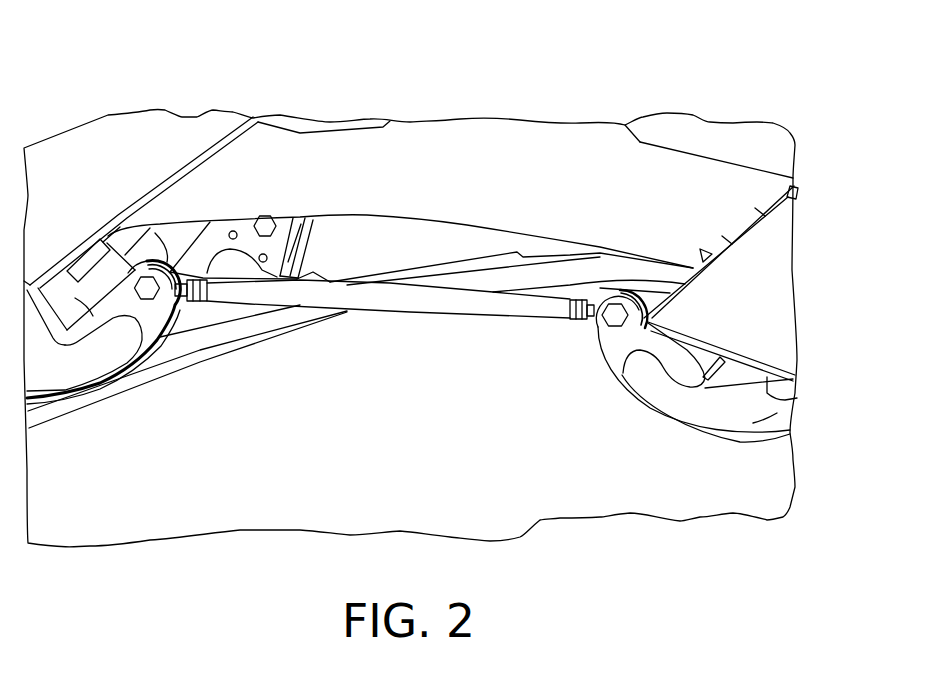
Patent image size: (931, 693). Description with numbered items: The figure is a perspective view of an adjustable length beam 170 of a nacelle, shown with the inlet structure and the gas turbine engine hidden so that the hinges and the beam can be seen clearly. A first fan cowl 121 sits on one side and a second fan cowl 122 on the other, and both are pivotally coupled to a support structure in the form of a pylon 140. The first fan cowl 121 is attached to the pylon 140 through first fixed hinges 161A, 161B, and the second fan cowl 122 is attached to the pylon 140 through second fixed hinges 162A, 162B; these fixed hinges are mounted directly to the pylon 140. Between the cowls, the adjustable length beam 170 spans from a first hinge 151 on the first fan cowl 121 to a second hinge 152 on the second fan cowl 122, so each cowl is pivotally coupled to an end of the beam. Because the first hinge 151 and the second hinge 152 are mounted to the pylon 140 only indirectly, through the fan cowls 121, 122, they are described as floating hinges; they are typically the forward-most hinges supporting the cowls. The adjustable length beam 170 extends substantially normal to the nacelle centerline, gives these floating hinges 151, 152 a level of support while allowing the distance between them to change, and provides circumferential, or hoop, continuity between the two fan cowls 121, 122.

The pylon 140 is at (482, 145).
The first fan cowl 121 is at (101, 185).
The second fan cowl 122 is at (767, 304).
The first hinge 151 is at (165, 288).
The second hinge 152 is at (603, 334).
The first fixed hinge 161A is at (265, 218).
The first fixed hinge 161B is at (338, 228).
The second fixed hinge 162A is at (735, 225).
The second fixed hinge 162B is at (802, 188).
The adjustable length beam 170 is at (408, 304).